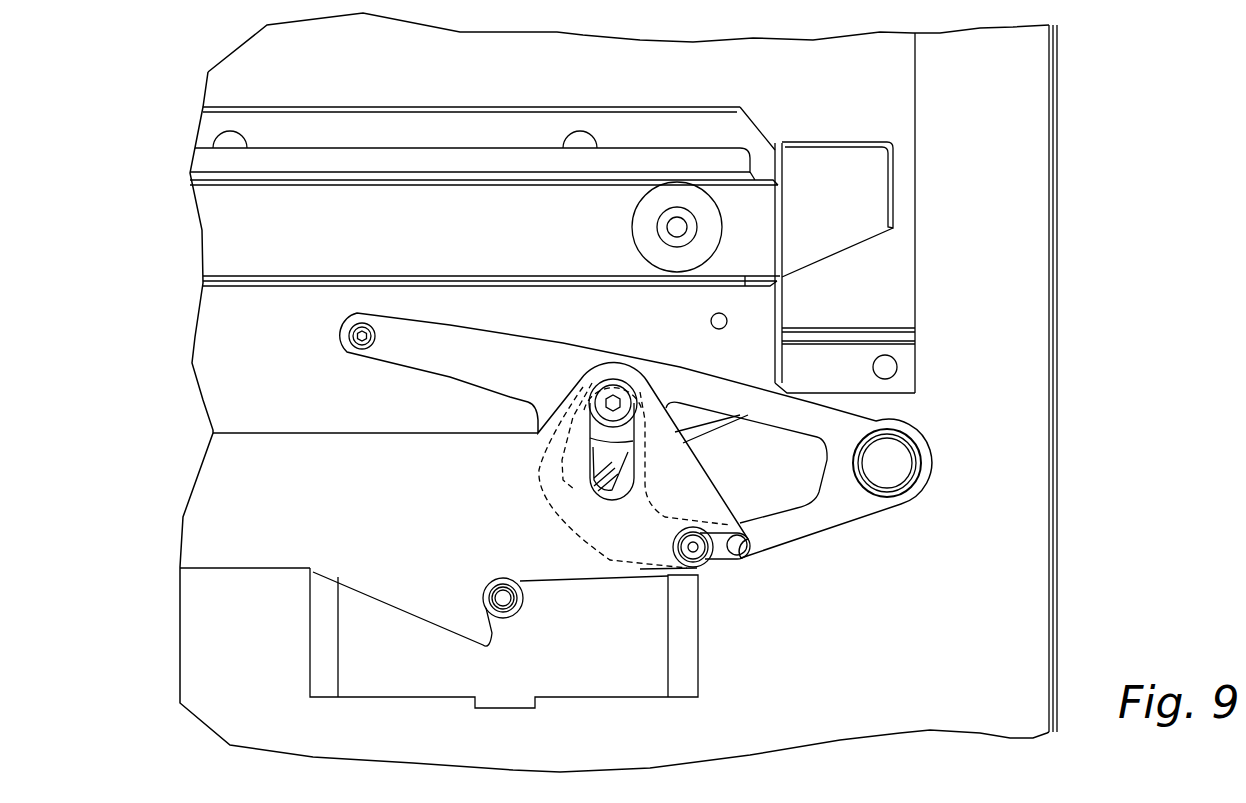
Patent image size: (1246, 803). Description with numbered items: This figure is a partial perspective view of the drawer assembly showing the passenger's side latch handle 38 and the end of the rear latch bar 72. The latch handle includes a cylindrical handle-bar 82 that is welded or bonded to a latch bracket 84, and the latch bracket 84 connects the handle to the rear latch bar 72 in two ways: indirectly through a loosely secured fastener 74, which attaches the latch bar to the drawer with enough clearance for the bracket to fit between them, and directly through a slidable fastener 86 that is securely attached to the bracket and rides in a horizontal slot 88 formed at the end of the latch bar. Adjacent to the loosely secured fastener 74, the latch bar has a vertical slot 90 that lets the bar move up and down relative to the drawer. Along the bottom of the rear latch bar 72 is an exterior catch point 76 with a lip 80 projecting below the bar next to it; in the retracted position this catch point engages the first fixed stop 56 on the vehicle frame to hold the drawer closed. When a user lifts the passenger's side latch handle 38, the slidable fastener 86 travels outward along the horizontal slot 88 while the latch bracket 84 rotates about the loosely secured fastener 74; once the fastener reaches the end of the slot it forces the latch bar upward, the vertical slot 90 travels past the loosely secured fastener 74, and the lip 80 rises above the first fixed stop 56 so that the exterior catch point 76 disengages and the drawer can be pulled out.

The passenger's side latch handle 38 is at (922, 433).
The first fixed stop 56 is at (522, 605).
The rear latch bar 72 is at (283, 555).
The loosely secured fastener 74 is at (608, 393).
The exterior catch point 76 is at (487, 587).
The lip 80 is at (470, 620).
The handle-bar 82 is at (893, 467).
The latch bracket 84 is at (847, 505).
The slidable fastener 86 is at (697, 550).
The horizontal slot 88 is at (737, 547).
The vertical slot 90 is at (597, 452).